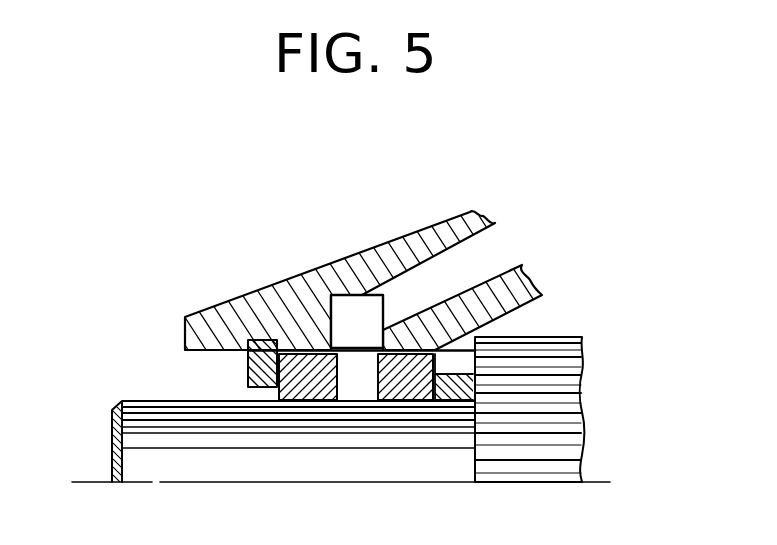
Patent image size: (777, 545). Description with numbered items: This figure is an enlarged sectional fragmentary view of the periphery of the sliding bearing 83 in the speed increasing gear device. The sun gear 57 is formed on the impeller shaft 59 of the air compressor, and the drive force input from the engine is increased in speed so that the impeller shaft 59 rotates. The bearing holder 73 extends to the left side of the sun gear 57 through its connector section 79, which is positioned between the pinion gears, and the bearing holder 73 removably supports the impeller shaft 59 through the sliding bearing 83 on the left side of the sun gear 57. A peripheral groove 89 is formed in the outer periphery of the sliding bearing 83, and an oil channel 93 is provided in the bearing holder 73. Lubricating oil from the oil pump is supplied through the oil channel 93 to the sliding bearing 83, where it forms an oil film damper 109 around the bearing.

The sun gear 57 is at (568, 376).
The impeller shaft 59 is at (138, 442).
The bearing holder 73 is at (295, 250).
The connector section 79 is at (514, 286).
The sliding bearing 83 is at (302, 386).
The peripheral groove 89 is at (352, 308).
The oil channel 93 is at (479, 262).
The oil film damper 109 is at (450, 350).